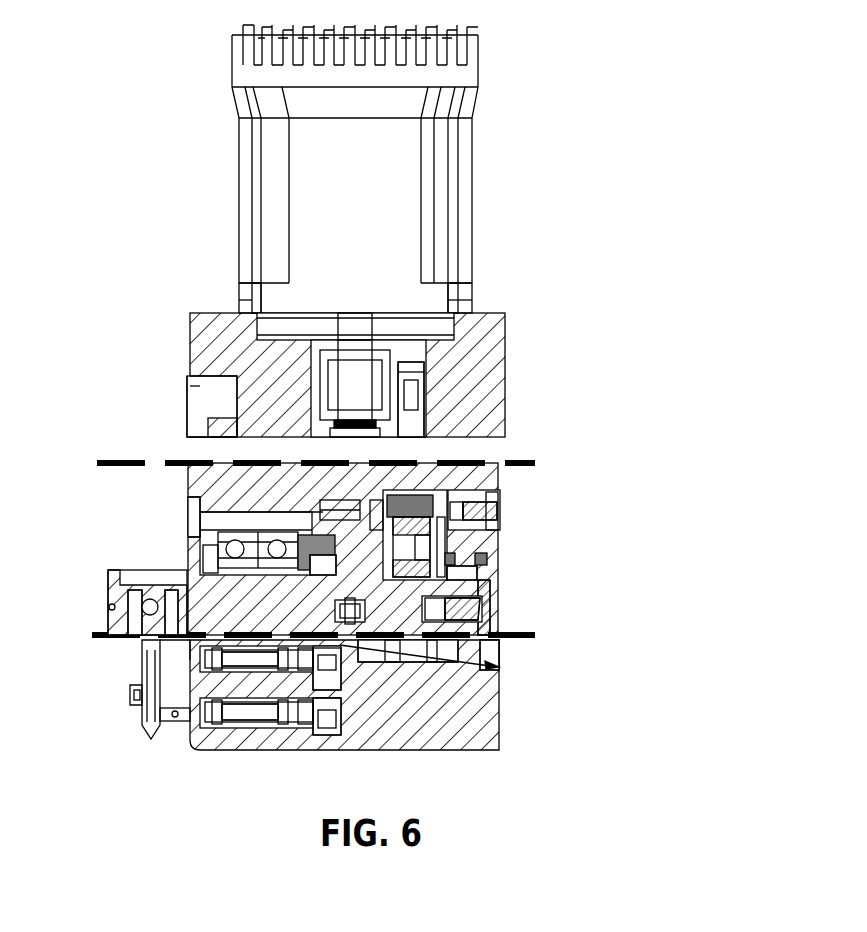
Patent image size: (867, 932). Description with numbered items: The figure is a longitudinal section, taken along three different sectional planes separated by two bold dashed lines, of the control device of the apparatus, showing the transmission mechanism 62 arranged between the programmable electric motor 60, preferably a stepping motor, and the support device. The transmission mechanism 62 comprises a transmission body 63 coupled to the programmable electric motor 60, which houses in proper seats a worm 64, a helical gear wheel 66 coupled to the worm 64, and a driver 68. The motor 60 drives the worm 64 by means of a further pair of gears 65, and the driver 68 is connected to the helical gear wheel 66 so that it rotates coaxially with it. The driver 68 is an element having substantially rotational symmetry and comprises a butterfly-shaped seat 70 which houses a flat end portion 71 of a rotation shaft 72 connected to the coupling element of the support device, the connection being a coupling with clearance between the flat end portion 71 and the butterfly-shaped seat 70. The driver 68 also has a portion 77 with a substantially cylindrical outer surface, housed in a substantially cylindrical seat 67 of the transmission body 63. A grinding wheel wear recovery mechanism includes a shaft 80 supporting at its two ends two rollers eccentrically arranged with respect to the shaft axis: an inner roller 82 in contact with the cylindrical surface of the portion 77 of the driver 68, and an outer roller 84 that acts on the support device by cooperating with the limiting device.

The programmable electric motor 60 is at (389, 233).
The transmission mechanism 62 is at (584, 300).
The transmission body 63 is at (197, 448).
The worm 64 is at (413, 427).
The pair of gears 65 is at (420, 395).
The helical gear wheel 66 is at (453, 518).
The seat 67 is at (323, 512).
The driver 68 is at (405, 602).
The butterfly-shaped seat 70 is at (342, 624).
The flat end portion 71 is at (345, 612).
The rotation shaft 72 is at (187, 595).
The portion 77 is at (493, 665).
The shaft 80 is at (198, 690).
The inner roller 82 is at (328, 720).
The outer roller 84 is at (150, 720).